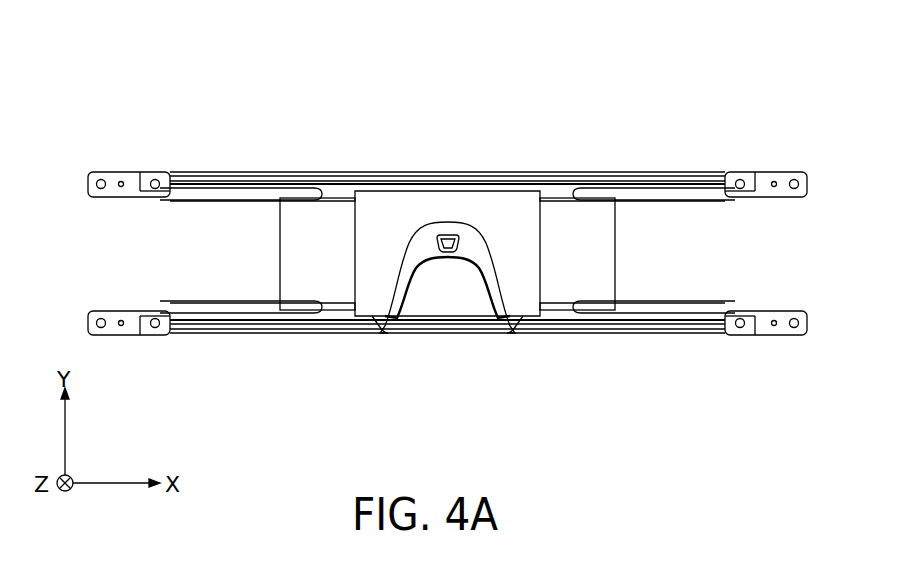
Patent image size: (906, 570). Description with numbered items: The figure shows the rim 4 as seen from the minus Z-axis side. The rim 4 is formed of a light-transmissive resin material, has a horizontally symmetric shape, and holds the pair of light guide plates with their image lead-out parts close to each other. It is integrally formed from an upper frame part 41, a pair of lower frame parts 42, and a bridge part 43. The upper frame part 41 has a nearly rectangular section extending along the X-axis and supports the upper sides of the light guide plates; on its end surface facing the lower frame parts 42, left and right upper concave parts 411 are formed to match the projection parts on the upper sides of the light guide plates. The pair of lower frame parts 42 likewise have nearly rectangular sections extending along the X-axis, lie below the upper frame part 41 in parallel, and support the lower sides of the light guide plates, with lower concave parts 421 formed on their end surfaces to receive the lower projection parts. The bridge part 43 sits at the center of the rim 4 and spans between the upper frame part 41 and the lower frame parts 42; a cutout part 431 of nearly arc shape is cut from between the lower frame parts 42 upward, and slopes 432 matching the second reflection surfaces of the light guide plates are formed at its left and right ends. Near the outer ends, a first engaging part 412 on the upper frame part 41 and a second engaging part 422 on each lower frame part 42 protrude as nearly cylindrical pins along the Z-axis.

The rim 4 is at (113, 84).
The upper frame part 41 is at (249, 172).
The upper concave parts 411 is at (208, 195).
The first engaging part 412 is at (121, 181).
The lower frame parts 42 is at (341, 321).
The lower concave parts 421 is at (250, 316).
The second engaging part 422 is at (121, 328).
The bridge part 43 is at (396, 221).
The cutout part 431 is at (413, 259).
The slopes 432 is at (336, 208).